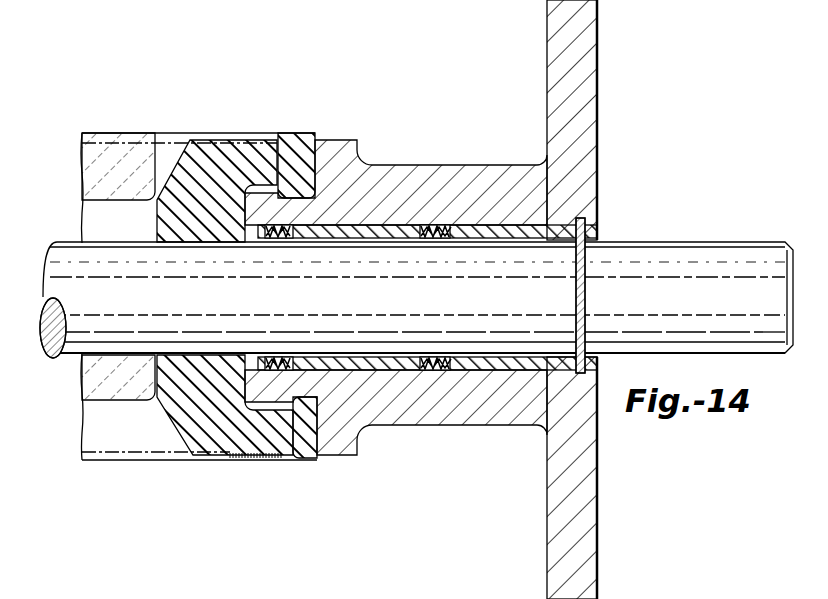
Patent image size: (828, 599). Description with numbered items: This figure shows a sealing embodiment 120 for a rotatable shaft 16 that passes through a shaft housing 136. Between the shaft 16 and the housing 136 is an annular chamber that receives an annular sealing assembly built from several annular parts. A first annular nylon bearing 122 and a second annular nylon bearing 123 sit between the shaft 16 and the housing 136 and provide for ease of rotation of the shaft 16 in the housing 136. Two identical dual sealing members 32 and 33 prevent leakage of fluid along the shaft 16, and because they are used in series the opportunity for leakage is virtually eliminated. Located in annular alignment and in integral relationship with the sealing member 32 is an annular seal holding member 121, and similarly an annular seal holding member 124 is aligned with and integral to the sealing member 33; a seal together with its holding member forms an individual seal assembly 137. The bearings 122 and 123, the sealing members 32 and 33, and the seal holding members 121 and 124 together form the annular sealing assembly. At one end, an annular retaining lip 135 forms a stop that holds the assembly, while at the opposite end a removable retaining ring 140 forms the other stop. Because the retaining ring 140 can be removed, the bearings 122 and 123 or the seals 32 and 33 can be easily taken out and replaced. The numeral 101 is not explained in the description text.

The shaft 16 is at (698, 240).
The annular sealing member 32 is at (296, 366).
The annular sealing member 33 is at (448, 371).
The bearing block 101 is at (166, 181).
The sealing embodiment 120 is at (345, 128).
The annular seal holding member 121 is at (253, 357).
The first annular nylon bearing 122 is at (380, 225).
The second annular nylon bearing 123 is at (490, 225).
The annular seal holding member 124 is at (425, 370).
The annular retaining lip 135 is at (257, 355).
The shaft housing 136 is at (597, 90).
The individual seal assembly 137 is at (199, 366).
The removable retaining ring 140 is at (598, 232).